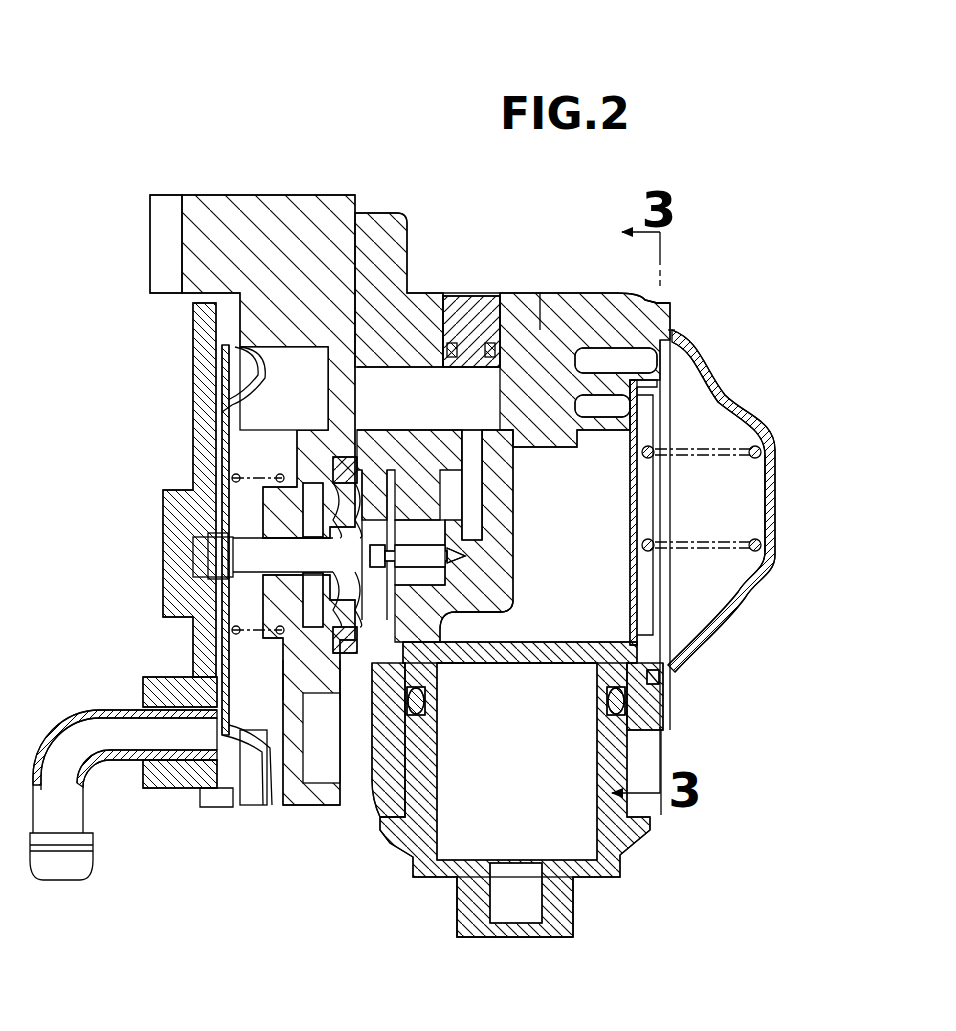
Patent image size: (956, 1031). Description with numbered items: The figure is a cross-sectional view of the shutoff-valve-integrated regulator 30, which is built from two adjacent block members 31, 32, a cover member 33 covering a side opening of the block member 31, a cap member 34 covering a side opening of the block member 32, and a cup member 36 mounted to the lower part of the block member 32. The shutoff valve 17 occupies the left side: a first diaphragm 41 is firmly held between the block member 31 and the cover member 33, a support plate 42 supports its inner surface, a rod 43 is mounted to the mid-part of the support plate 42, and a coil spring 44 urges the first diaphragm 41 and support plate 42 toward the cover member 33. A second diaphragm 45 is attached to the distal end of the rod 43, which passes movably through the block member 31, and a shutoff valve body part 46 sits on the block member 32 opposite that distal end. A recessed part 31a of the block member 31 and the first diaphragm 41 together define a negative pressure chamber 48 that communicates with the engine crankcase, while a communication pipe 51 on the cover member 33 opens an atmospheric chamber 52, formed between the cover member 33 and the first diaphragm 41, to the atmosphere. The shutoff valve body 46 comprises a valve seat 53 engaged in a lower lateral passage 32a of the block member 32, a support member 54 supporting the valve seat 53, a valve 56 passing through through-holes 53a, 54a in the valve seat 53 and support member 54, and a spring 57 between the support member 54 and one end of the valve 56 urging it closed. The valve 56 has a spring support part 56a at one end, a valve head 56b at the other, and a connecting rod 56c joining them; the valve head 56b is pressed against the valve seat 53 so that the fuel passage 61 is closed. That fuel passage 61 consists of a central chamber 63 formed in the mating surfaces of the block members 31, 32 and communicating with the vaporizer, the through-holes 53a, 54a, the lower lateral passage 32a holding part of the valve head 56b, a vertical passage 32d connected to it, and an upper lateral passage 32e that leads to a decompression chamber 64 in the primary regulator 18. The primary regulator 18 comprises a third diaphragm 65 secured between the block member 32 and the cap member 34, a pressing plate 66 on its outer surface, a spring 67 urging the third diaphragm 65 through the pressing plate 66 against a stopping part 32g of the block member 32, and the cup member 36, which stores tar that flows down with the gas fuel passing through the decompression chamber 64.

The shutoff valve 17 is at (140, 240).
The primary regulator 18 is at (700, 338).
The shutoff-valve-integrated regulator 30 is at (168, 82).
The block member 31 is at (291, 205).
The recessed part 31a is at (316, 372).
The block member 32 is at (528, 293).
The lower lateral passage 32a is at (640, 590).
The vertical passage 32d is at (558, 305).
The upper lateral passage 32e is at (560, 348).
The stopping part 32g is at (670, 337).
The cover member 33 is at (193, 394).
The cap member 34 is at (743, 417).
The cup member 36 is at (476, 917).
The first diaphragm 41 is at (215, 374).
The support plate 42 is at (224, 438).
The rod 43 is at (205, 548).
The coil spring 44 is at (225, 604).
The second diaphragm 45 is at (270, 660).
The shutoff valve body part 46 is at (470, 595).
The negative pressure chamber 48 is at (292, 386).
The communication pipe 51 is at (68, 870).
The atmospheric chamber 52 is at (230, 750).
The valve seat 53 is at (625, 703).
The through-hole 53a is at (432, 530).
The support member 54 is at (400, 600).
The through-hole 54a is at (410, 535).
The valve 56 is at (586, 545).
The spring support part 56a is at (300, 620).
The valve head 56b is at (470, 572).
The connecting rod 56c is at (455, 660).
The spring 57 is at (345, 600).
The fuel passage 61 is at (480, 390).
The central chamber 63 is at (376, 485).
The decompression chamber 64 is at (590, 510).
The third diaphragm 65 is at (665, 377).
The pressing plate 66 is at (647, 413).
The spring 67 is at (762, 458).